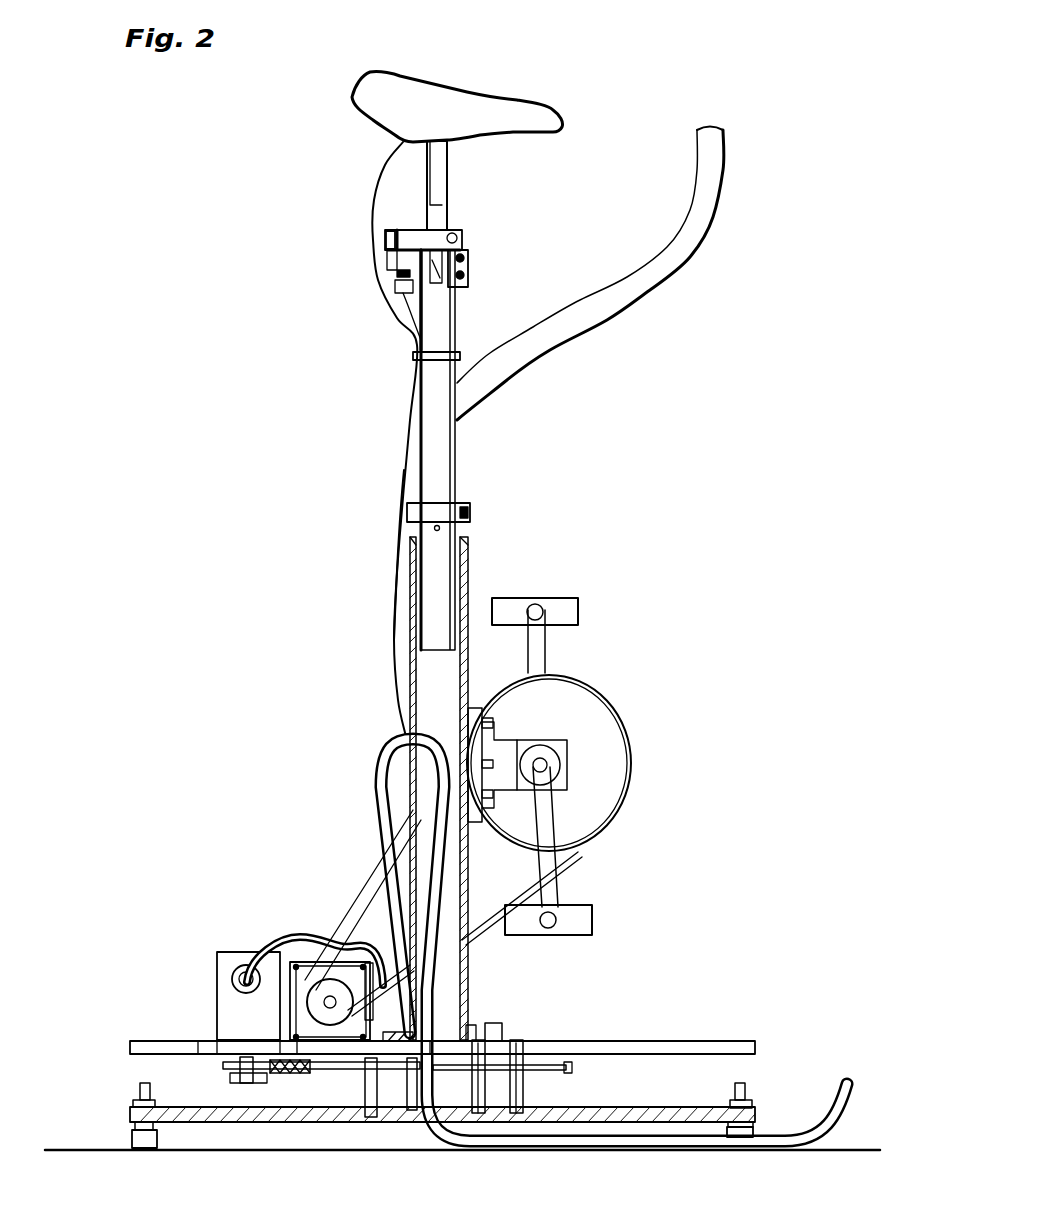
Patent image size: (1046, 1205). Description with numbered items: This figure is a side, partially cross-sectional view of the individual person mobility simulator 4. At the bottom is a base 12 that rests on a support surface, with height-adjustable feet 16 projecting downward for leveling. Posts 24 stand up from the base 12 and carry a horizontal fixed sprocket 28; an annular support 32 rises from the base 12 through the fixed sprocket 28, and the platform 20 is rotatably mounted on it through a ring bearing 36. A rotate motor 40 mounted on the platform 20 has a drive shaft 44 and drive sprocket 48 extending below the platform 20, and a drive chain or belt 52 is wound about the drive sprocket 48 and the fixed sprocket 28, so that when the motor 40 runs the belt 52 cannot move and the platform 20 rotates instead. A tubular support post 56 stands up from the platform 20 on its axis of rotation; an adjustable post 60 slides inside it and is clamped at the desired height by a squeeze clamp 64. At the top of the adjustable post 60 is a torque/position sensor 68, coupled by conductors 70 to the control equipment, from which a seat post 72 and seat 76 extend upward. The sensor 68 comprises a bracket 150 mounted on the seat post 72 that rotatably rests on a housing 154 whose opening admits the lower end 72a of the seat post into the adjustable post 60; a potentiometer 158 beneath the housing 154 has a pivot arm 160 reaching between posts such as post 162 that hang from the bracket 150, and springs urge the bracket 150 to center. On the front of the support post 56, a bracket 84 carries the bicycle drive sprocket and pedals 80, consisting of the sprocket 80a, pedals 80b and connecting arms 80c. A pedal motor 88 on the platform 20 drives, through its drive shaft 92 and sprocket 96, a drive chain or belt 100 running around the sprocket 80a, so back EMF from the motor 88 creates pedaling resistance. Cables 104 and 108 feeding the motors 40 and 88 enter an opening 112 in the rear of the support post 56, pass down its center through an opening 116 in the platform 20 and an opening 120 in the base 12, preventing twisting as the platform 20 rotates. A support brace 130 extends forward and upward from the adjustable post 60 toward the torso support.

The simulator 4 is at (610, 737).
The base 12 is at (148, 1086).
The feet 16 is at (140, 1140).
The platform 20 is at (710, 1041).
The posts 24 is at (327, 1103).
The fixed sprocket 28 is at (572, 1067).
The annular support 32 is at (511, 1052).
The ring bearing 36 is at (502, 1040).
The rotate motor 40 is at (217, 997).
The drive shaft 44 is at (222, 1065).
The drive sprocket 48 is at (240, 1082).
The drive chain or belt 52 is at (273, 1074).
The tubular support post 56 is at (409, 662).
The adjustable post 60 is at (420, 428).
The squeeze clamp 64 is at (470, 505).
The torque/position sensor 68 is at (485, 253).
The conductors 70 is at (403, 487).
The seat post 72 is at (450, 187).
The lower end of the seat post 72a is at (453, 290).
The seat 76 is at (473, 92).
The bicycle drive sprocket and pedals 80 is at (655, 765).
The sprocket 80a is at (589, 811).
The pedals 80b is at (562, 606).
The pedal-sprocket connecting arms 80c is at (541, 648).
The bracket 84 is at (565, 742).
The pedal motor 88 is at (290, 964).
The drive shaft 92 is at (300, 966).
The sprocket 96 is at (330, 980).
The drive chain or belt 100 is at (350, 907).
The cable 104 is at (233, 960).
The cable 108 is at (392, 922).
The opening 112 is at (402, 720).
The opening 116 is at (441, 1046).
The opening 120 is at (430, 1115).
The support brace 130 is at (620, 300).
The upper plate or bracket 150 is at (387, 237).
The torque/position sensor housing 154 is at (390, 279).
The potentiometer 158 is at (403, 297).
The pivot arm 160 is at (397, 288).
The post 162 is at (387, 262).